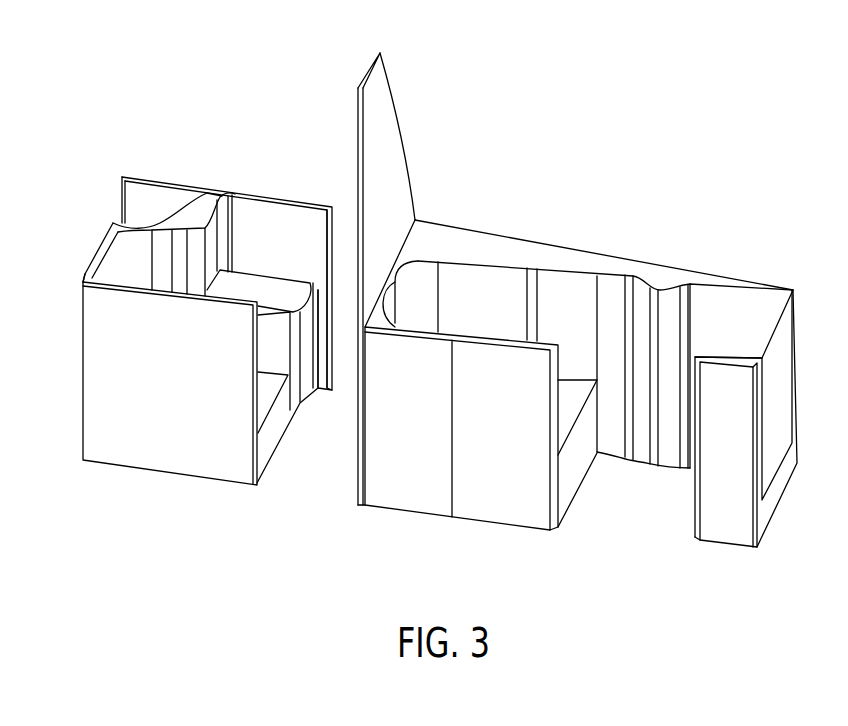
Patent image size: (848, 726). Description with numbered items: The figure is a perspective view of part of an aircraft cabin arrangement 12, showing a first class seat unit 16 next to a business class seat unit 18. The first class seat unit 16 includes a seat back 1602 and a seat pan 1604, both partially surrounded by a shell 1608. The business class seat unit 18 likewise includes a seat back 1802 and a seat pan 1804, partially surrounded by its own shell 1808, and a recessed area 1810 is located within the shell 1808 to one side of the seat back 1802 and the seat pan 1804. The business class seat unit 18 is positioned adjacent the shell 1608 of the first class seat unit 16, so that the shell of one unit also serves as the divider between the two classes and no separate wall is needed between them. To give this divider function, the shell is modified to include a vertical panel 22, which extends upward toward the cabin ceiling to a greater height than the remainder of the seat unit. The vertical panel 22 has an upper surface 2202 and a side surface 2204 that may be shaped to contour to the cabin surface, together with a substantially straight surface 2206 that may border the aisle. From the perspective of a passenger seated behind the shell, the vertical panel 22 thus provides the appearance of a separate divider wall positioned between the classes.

The aircraft cabin arrangement 12 is at (685, 110).
The first class seat unit 16 is at (568, 257).
The business class seat unit 18 is at (153, 190).
The vertical panel 22 is at (404, 254).
The seat back 1602 is at (400, 305).
The seat pan 1604 is at (575, 420).
The shell 1608 is at (372, 378).
The seat back 1802 is at (115, 256).
The seat pan 1804 is at (263, 397).
The shell 1808 is at (102, 387).
The recessed area 1810 is at (180, 194).
The upper surface 2202 is at (365, 86).
The side surface 2204 is at (397, 126).
The substantially straight surface 2206 is at (347, 197).